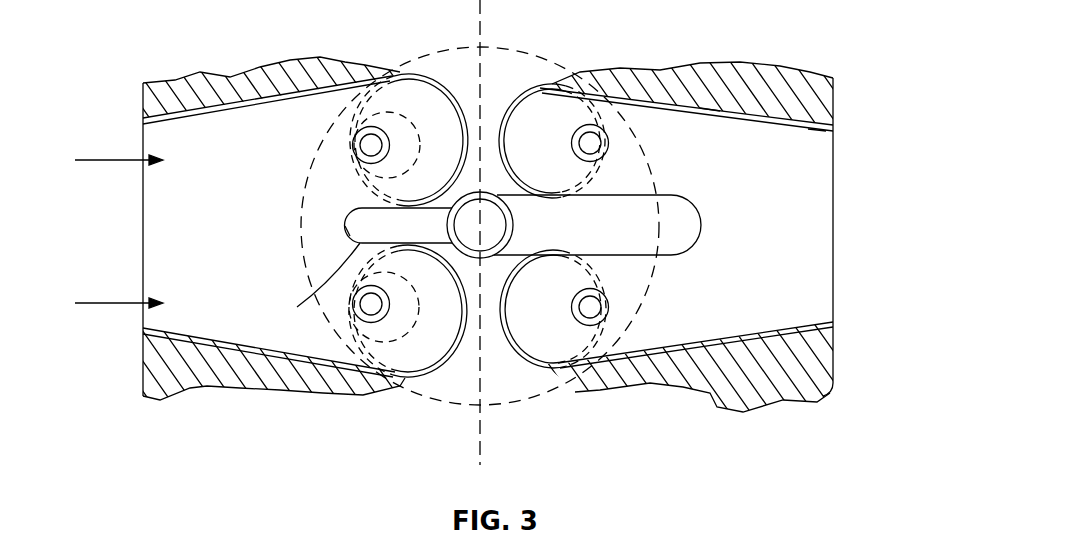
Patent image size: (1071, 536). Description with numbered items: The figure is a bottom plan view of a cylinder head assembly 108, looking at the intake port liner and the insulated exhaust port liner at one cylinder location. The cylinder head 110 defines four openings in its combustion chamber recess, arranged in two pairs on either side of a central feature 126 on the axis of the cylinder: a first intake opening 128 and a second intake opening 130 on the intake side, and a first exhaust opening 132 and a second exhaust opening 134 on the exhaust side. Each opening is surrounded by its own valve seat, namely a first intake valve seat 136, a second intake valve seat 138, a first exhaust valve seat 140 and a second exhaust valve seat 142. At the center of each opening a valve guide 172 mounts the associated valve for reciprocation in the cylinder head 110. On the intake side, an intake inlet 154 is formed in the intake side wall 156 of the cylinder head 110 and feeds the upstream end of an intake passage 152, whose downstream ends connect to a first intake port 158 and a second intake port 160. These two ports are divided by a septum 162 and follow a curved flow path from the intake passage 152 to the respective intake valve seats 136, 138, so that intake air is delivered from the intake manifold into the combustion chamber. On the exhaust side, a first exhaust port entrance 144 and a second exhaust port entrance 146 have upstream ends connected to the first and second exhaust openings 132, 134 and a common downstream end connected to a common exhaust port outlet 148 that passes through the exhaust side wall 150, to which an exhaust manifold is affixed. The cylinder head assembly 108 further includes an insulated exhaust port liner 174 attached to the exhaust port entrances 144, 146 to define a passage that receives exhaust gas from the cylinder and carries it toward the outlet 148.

The cylinder head assembly 108 is at (836, 80).
The cylinder head 110 is at (833, 88).
The central opening 126 is at (478, 223).
The first intake opening 128 is at (405, 74).
The second intake opening 130 is at (410, 380).
The first exhaust opening 132 is at (560, 368).
The second exhaust opening 134 is at (561, 86).
The first intake valve seat 136 is at (415, 73).
The second intake valve seat 138 is at (430, 372).
The first exhaust valve seat 140 is at (537, 365).
The second exhaust valve seat 142 is at (541, 86).
The first exhaust port entrance 144 is at (683, 350).
The second exhaust port entrance 146 is at (710, 107).
The common exhaust port outlet 148 is at (817, 130).
The exhaust side wall 150 is at (833, 122).
The intake passage 152 is at (167, 327).
The intake inlet 154 is at (160, 125).
The intake side wall 156 is at (143, 86).
The first intake port 158 is at (335, 207).
The second intake port 160 is at (297, 307).
The septum 162 is at (345, 226).
The valve guide 172 is at (356, 134).
The insulated exhaust port liner 174 is at (806, 316).